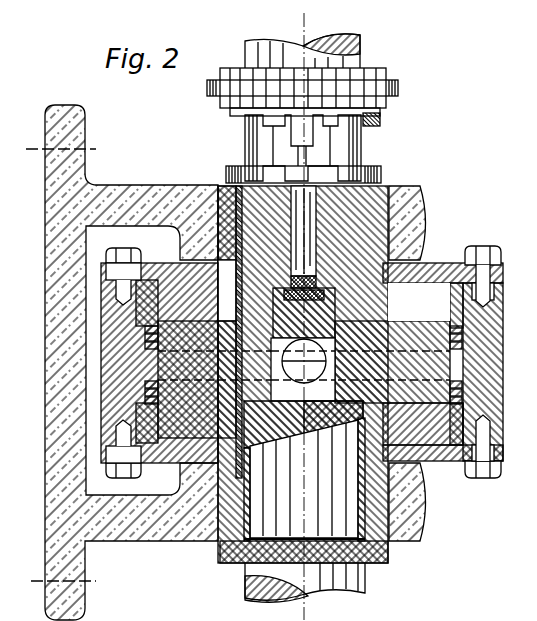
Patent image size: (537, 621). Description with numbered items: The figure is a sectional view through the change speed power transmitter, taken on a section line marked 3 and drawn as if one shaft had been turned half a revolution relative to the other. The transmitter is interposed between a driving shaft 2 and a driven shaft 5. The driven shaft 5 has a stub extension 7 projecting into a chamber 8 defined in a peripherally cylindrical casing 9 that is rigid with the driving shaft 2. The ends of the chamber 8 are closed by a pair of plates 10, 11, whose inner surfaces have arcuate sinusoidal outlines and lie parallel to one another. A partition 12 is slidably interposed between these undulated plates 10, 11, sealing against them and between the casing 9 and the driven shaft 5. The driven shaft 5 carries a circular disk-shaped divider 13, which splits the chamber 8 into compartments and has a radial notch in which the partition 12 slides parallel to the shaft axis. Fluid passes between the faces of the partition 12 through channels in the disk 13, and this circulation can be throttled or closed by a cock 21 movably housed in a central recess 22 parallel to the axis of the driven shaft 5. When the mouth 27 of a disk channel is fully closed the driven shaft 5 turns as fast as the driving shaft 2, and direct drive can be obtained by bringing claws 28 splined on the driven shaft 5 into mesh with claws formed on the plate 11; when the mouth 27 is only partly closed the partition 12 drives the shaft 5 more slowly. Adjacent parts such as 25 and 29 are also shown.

The driving shaft 2 is at (302, 230).
The section line 3- 3 is at (91, 344).
The driven shaft 5 is at (252, 132).
The stub extension 7 is at (277, 380).
The chamber 8 is at (423, 293).
The casing 9 is at (478, 323).
The plate 10 is at (413, 433).
The plate 11 is at (437, 262).
The partition 12 is at (186, 407).
The disk-shaped divider 13 is at (428, 382).
The cock 21 is at (265, 292).
The central recess 22 is at (302, 362).
The shaft portion 25 is at (415, 213).
The mouth 27 is at (383, 463).
The claws 28 is at (372, 112).
The clutch base ring 29 is at (342, 166).